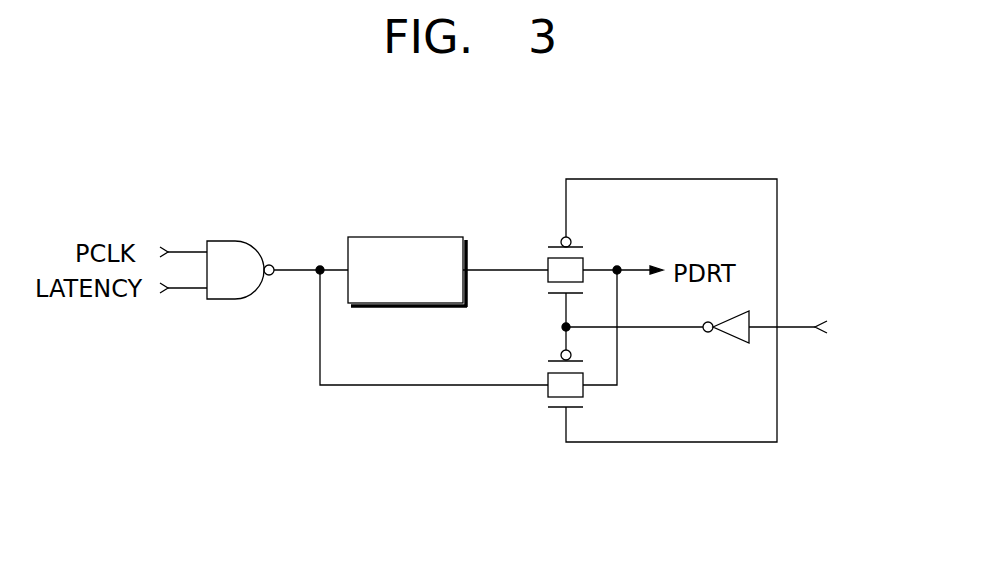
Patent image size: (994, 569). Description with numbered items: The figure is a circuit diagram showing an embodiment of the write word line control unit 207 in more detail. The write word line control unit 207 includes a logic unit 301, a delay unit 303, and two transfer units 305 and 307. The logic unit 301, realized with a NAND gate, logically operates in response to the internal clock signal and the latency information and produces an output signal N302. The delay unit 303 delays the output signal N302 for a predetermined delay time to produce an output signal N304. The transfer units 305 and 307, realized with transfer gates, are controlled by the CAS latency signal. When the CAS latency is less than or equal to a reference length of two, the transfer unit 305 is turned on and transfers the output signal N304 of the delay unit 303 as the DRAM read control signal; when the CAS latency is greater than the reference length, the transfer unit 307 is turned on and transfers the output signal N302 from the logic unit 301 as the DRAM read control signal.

The write word line control unit 207 is at (754, 134).
The logic unit 301 is at (223, 241).
The output signal of the logic unit N302 is at (293, 269).
The delay unit 303 is at (412, 237).
The output signal of the delay unit N304 is at (510, 269).
The transfer unit 305 is at (578, 242).
The transfer unit 307 is at (560, 408).